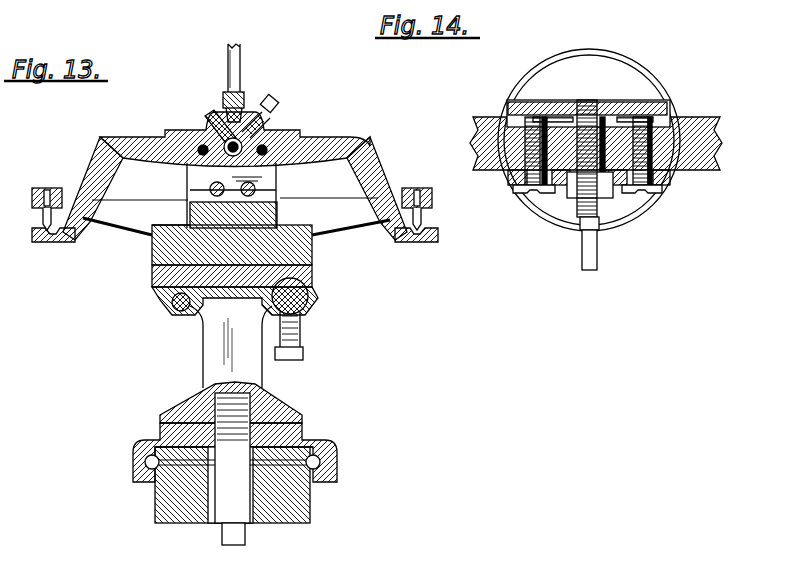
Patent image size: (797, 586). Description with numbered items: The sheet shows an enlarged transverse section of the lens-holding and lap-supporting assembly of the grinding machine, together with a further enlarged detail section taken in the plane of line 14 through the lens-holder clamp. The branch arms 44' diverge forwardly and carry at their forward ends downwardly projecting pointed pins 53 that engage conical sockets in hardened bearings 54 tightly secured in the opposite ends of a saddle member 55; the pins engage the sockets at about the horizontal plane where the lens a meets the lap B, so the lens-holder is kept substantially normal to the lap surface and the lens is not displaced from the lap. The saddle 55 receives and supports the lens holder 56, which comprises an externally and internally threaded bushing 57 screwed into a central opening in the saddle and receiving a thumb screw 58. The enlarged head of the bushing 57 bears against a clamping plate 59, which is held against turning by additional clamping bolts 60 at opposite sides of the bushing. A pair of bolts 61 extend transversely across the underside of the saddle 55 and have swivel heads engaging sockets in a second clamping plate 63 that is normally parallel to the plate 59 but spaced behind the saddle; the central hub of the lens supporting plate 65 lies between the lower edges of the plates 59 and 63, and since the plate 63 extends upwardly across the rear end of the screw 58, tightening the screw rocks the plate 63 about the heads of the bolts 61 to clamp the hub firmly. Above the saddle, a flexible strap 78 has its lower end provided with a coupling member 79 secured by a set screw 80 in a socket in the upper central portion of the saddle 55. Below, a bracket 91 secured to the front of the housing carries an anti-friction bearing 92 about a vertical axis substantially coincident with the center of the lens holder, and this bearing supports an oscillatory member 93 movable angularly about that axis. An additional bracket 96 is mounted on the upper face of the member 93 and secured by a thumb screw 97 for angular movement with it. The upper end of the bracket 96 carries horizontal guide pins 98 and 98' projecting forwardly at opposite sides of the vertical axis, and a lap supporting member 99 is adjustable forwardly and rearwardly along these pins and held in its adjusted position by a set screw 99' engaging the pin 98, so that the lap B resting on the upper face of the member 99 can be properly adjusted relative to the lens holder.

In FIG. 13, the flexible strap 78 is at (238, 50).
In FIG. 13, the coupling member 79 is at (243, 96).
In FIG. 13, the set screw 80 is at (270, 98).
In FIG. 13, the cover plate 14 is at (185, 150).
In FIG. 13, the thumb screw 58 is at (229, 140).
In FIG. 14, the thumb screw 58 is at (597, 232).
In FIG. 13, the saddle member 55 is at (318, 138).
In FIG. 14, the saddle member 55 is at (478, 147).
In FIG. 13, the pointed pins 53 is at (40, 222).
In FIG. 13, the hardened bearings 54 is at (50, 242).
In FIG. 13, the branch arms 44' is at (236, 226).
In FIG. 13, the clamping plate 63 is at (187, 174).
In FIG. 14, the clamping plate 63 is at (581, 102).
In FIG. 13, the clamping bolts 60 is at (204, 156).
In FIG. 14, the clamping bolts 60 is at (526, 196).
In FIG. 13, the bolts 61 is at (212, 188).
In FIG. 13, the threaded bushing 57 is at (233, 208).
In FIG. 14, the threaded bushing 57 is at (572, 200).
In FIG. 13, the lens holder 56 is at (277, 192).
In FIG. 14, the lens holder 56 is at (528, 92).
In FIG. 13, the lens a is at (180, 225).
In FIG. 13, the lap B is at (152, 262).
In FIG. 14, the lap B is at (636, 64).
In FIG. 13, the guide pin 98' is at (161, 308).
In FIG. 13, the lap supporting member 99 is at (231, 337).
In FIG. 13, the guide pin 98 is at (310, 296).
In FIG. 13, the set screw 99' is at (293, 348).
In FIG. 13, the bracket 96 is at (205, 398).
In FIG. 13, the oscillatory member 93 is at (333, 438).
In FIG. 13, the anti-friction bearing 92 is at (143, 465).
In FIG. 13, the bracket 91 is at (186, 505).
In FIG. 13, the thumb screw 97 is at (238, 522).
In FIG. 14, the lens supporting plate 65 is at (575, 72).
In FIG. 14, the clamping plate 59 is at (672, 181).